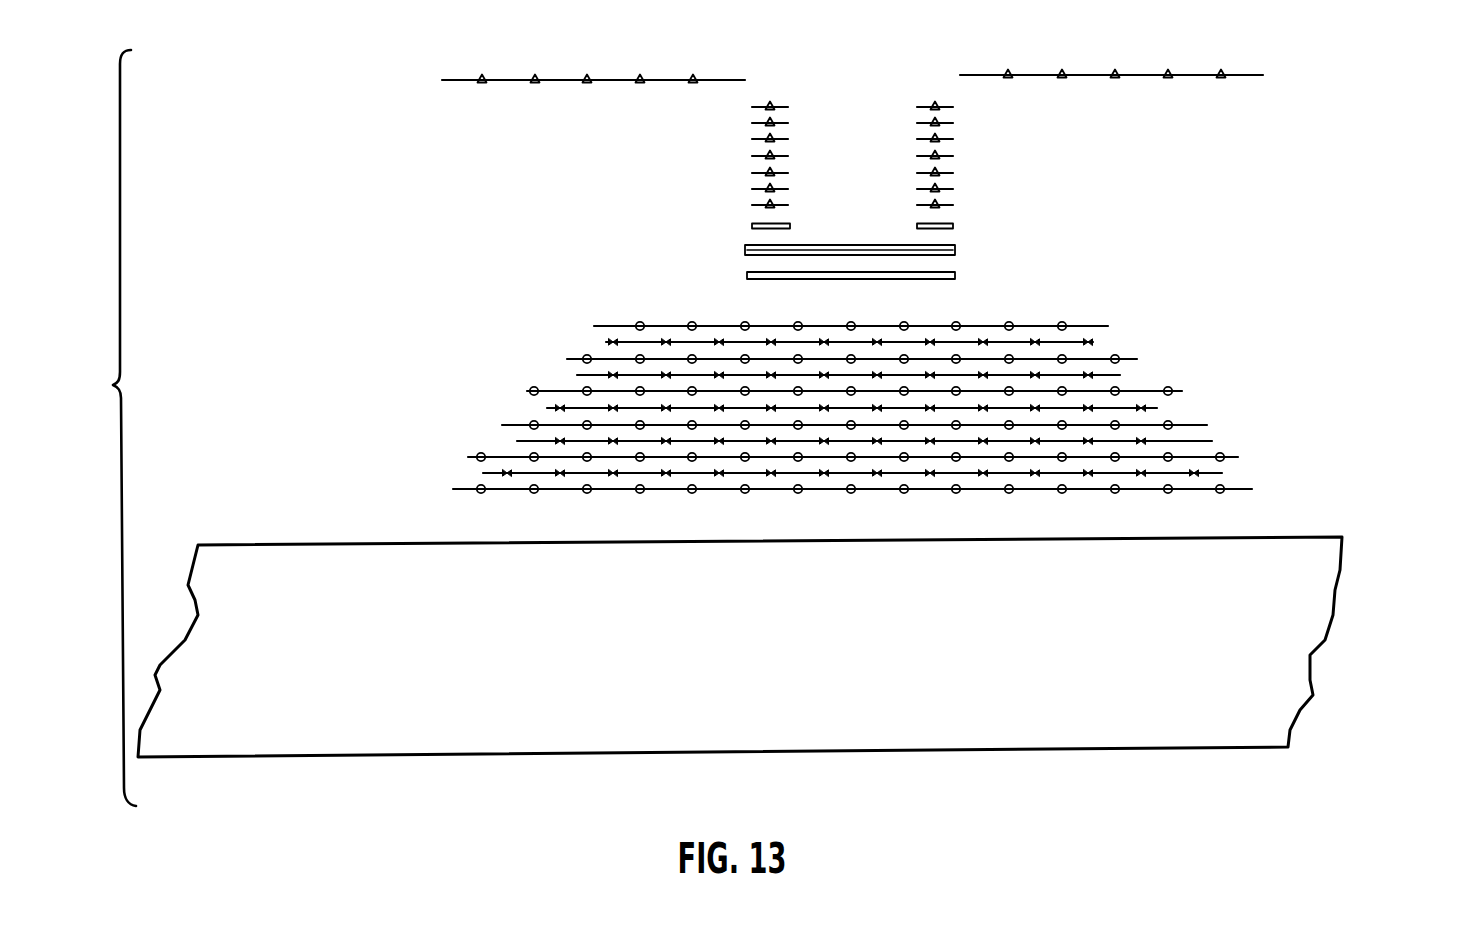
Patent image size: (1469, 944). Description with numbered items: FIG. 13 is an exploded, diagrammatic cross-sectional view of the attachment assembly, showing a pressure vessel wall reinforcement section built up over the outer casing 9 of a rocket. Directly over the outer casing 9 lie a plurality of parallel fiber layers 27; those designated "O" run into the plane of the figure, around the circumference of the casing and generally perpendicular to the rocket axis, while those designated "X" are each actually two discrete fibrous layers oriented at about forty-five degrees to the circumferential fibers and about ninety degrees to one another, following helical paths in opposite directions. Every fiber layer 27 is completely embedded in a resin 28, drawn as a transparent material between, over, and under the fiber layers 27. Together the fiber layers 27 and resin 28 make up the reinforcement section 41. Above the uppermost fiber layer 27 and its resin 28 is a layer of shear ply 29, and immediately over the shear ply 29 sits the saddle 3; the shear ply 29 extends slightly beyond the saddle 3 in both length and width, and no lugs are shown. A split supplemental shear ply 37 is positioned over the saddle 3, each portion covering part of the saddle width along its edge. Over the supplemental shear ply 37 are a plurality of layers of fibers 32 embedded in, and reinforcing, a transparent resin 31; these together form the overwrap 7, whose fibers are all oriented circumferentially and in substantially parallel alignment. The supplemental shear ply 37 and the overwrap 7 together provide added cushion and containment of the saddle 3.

The saddle 3 is at (955, 248).
The overwrap 7 is at (679, 196).
The outer casing 9 is at (1322, 575).
The fiber layers 27 is at (1148, 387).
The resin 28 is at (663, 320).
The shear ply 29 is at (940, 279).
The resin 31 is at (670, 66).
The layers of fibers 32 is at (1186, 77).
The supplemental shear ply 37 is at (750, 226).
The reinforcement section 41 is at (807, 404).